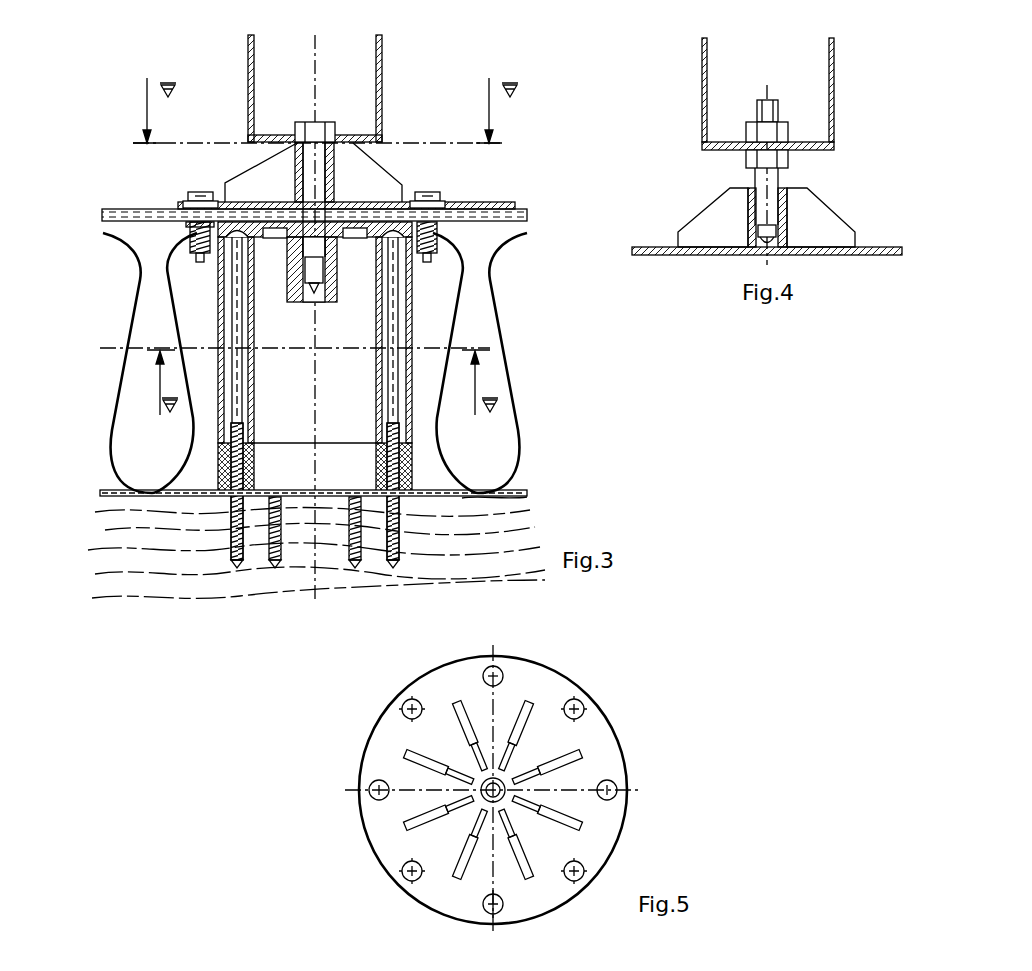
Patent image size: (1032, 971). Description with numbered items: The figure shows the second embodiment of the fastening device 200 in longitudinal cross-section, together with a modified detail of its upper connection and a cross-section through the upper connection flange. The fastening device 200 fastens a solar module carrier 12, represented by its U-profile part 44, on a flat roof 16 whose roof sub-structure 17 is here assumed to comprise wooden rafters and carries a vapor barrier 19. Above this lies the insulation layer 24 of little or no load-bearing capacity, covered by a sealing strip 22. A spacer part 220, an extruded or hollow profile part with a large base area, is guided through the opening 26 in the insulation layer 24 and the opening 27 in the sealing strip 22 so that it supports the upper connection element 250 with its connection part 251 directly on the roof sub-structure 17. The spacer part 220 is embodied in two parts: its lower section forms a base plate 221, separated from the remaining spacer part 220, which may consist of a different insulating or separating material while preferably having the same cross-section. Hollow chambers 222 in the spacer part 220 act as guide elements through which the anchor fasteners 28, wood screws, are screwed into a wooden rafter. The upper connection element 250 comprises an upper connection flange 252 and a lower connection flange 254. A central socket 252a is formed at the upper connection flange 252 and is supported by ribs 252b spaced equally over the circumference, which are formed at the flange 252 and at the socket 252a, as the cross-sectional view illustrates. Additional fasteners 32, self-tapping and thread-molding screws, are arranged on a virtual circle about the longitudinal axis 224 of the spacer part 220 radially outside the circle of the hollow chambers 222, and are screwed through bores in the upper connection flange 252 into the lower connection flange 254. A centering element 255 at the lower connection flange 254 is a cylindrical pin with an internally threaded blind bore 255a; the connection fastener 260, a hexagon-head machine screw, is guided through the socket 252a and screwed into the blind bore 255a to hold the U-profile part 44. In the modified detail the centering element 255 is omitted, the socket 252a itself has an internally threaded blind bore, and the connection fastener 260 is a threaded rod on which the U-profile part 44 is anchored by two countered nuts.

In FIG. 3, the solar module carrier 12 is at (395, 88).
In FIG. 3, the flat roof 16 is at (560, 519).
In FIG. 3, the roof sub-structure 17 is at (160, 558).
In FIG. 3, the vapor barrier 19 is at (503, 490).
In FIG. 3, the sealing strip 22 is at (527, 222).
In FIG. 3, the insulation layer 24 is at (490, 440).
In FIG. 3, the opening in the insulation layer 26 is at (412, 332).
In FIG. 3, the opening in the sealing strip 27 is at (335, 279).
In FIG. 3, the anchor fastener 28 is at (392, 323).
In FIG. 3, the additional fastener 32 is at (185, 200).
In FIG. 5, the additional fastener 32 is at (505, 673).
In FIG. 3, the U-profile part 44 is at (247, 72).
In FIG. 4, the U-profile part 44 is at (834, 86).
In FIG. 3, the fastening device 200 is at (197, 369).
In FIG. 3, the spacer part 220 is at (420, 342).
In FIG. 3, the base plate 221 is at (403, 494).
In FIG. 3, the hollow chamber 222 is at (220, 310).
In FIG. 3, the longitudinal axis 224 is at (312, 457).
In FIG. 4, the upper connection element 250 is at (694, 178).
In FIG. 3, the connection part 251 is at (218, 180).
In FIG. 3, the upper connection flange 252 is at (150, 222).
In FIG. 4, the upper connection flange 252 is at (897, 255).
In FIG. 3, the socket 252a is at (297, 180).
In FIG. 4, the socket 252a is at (787, 188).
In FIG. 3, the rib 252b is at (377, 185).
In FIG. 4, the rib 252b is at (895, 198).
In FIG. 5, the rib 252b is at (573, 815).
In FIG. 3, the lower connection flange 254 is at (190, 224).
In FIG. 3, the centering element 255 is at (300, 300).
In FIG. 3, the blind bore 255a is at (315, 290).
In FIG. 3, the connection fastener 260 is at (306, 140).
In FIG. 4, the connection fastener 260 is at (768, 98).
In FIG. 5, the connection fastener 260 is at (510, 803).